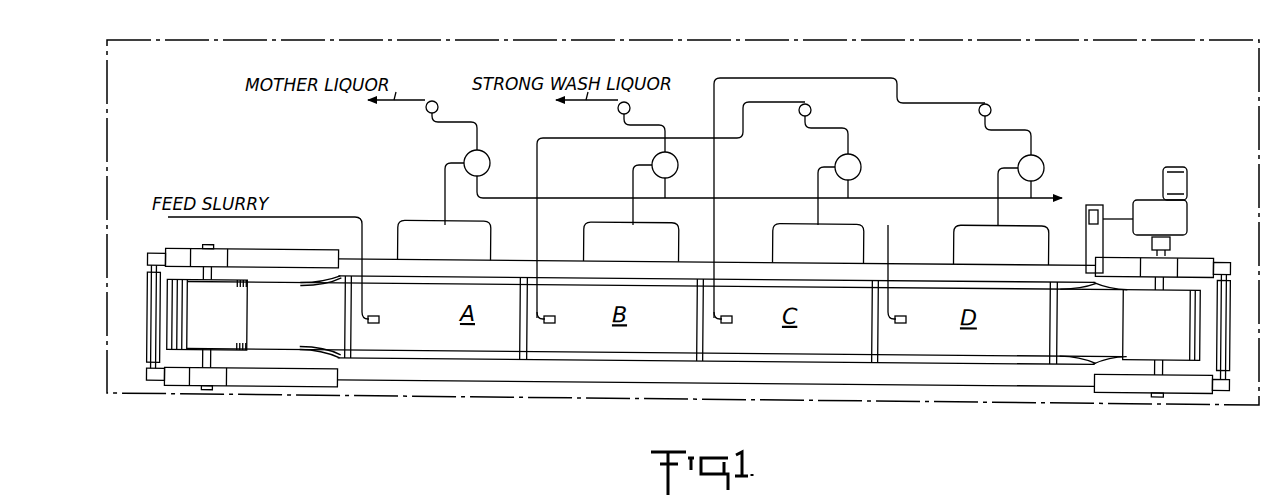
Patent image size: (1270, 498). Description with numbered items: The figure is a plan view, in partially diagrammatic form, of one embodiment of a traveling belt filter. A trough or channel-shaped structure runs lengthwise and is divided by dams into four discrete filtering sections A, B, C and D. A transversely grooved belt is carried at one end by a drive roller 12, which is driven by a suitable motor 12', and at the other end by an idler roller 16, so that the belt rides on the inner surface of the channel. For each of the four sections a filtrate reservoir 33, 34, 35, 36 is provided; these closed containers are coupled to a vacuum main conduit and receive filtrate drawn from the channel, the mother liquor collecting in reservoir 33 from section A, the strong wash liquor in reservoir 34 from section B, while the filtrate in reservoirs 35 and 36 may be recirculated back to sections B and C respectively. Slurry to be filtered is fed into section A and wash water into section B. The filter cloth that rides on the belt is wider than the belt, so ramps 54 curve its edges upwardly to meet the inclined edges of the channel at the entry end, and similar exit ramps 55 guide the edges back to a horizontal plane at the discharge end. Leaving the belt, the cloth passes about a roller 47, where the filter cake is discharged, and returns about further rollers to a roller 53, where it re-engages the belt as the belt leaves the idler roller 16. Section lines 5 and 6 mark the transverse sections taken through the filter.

The section line 5- 5 is at (223, 318).
The section line 6- 6 is at (583, 426).
The drive roller 12 is at (1162, 325).
The motor 12' is at (1164, 220).
The idler roller 16 is at (204, 288).
The filtrate reservoir 33 is at (486, 154).
The filtrate reservoir 34 is at (652, 163).
The filtrate reservoir 35 is at (835, 164).
The filtrate reservoir 36 is at (1018, 165).
The roller 47 is at (1232, 286).
The roller 53 is at (153, 307).
The ramps 54 is at (322, 288).
The exit ramps 55 is at (1109, 290).